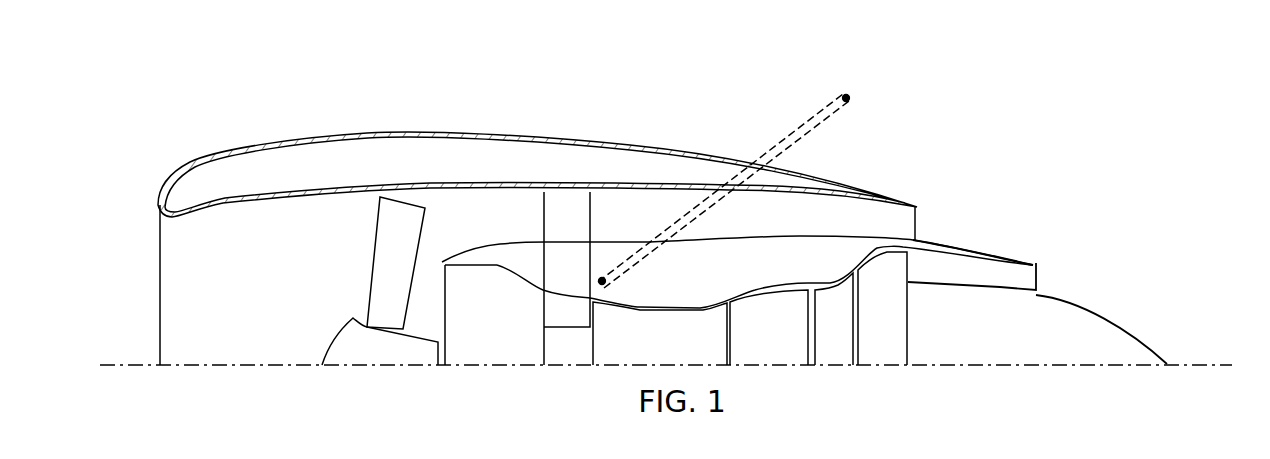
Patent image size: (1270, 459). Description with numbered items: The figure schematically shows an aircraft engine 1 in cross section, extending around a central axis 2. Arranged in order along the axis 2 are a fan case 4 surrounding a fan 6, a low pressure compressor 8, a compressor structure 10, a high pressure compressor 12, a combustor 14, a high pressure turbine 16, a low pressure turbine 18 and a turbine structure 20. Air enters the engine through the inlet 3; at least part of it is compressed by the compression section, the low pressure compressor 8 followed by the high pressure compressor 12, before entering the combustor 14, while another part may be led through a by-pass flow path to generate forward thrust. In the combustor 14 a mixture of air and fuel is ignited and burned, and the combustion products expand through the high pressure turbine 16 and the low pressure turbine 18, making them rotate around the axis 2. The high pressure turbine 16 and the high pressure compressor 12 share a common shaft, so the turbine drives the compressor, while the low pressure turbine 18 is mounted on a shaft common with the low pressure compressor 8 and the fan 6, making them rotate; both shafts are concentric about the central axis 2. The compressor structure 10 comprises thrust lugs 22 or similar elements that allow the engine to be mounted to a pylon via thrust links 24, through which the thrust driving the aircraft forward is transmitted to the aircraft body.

The aircraft engine 1 is at (1013, 104).
The central axis 2 is at (1207, 361).
The inlet 3 is at (178, 270).
The fan case 4 is at (233, 152).
The fan 6 is at (383, 284).
The low pressure compressor 8 is at (480, 335).
The compressor structure 10 is at (563, 232).
The high pressure compressor 12 is at (645, 351).
The combustor 14 is at (752, 340).
The high pressure turbine 16 is at (817, 340).
The low pressure turbine 18 is at (865, 333).
The turbine structure 20 is at (1020, 282).
The thrust lugs 22 is at (606, 283).
The thrust links 24 is at (810, 128).